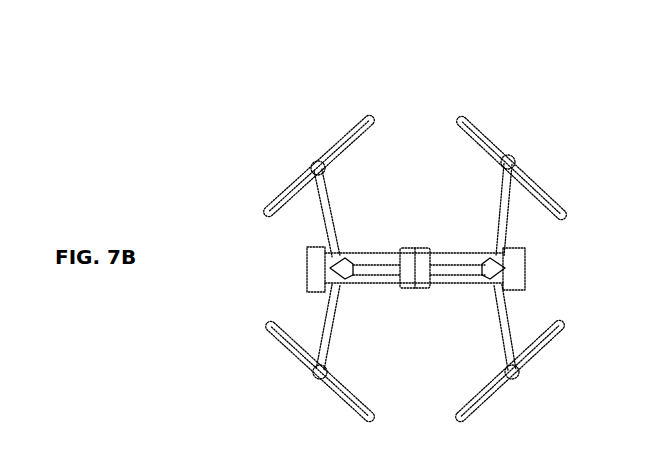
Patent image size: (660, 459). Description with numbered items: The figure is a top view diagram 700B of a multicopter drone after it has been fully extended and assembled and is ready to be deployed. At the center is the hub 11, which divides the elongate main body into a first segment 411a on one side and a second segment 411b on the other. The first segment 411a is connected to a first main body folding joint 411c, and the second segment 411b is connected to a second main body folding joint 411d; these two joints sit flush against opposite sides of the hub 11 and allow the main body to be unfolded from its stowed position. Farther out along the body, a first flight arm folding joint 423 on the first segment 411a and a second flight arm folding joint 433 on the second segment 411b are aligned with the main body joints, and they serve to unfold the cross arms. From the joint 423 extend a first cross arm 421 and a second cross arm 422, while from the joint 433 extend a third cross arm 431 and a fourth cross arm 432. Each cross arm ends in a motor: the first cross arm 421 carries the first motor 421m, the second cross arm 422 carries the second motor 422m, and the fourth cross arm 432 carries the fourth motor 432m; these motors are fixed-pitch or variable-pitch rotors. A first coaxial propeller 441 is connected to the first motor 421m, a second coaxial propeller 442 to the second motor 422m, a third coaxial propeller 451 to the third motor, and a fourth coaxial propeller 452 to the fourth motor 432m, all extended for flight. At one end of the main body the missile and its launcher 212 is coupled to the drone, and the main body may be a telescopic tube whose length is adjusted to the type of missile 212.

The top view diagram 700B is at (461, 74).
The hub 11 is at (418, 248).
The missile and its launcher 212 is at (527, 270).
The first segment 411a is at (457, 269).
The second segment 411b is at (370, 267).
The first main body folding joint 411c is at (436, 269).
The second main body folding joint 411d is at (397, 270).
The second flight arm folding joint 433 is at (335, 262).
The first flight arm folding joint 423 is at (490, 270).
The third cross arm 431 is at (327, 198).
The first cross arm 421 is at (500, 212).
The fourth cross arm 432 is at (323, 323).
The second cross arm 422 is at (505, 338).
The fourth motor 432m is at (317, 163).
The first motor 421m is at (518, 160).
The second motor 422m is at (522, 375).
The third coaxial propeller 451 is at (287, 187).
The first coaxial propeller 441 is at (545, 188).
The fourth coaxial propeller 452 is at (280, 335).
The second coaxial propeller 442 is at (555, 338).